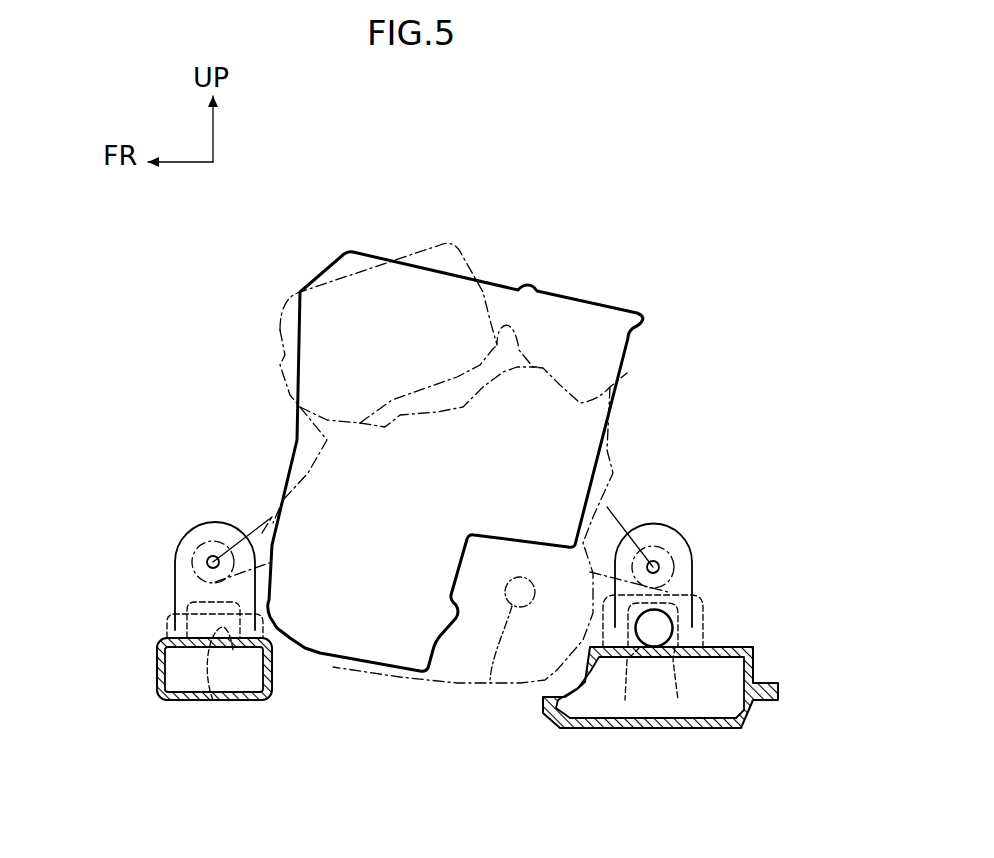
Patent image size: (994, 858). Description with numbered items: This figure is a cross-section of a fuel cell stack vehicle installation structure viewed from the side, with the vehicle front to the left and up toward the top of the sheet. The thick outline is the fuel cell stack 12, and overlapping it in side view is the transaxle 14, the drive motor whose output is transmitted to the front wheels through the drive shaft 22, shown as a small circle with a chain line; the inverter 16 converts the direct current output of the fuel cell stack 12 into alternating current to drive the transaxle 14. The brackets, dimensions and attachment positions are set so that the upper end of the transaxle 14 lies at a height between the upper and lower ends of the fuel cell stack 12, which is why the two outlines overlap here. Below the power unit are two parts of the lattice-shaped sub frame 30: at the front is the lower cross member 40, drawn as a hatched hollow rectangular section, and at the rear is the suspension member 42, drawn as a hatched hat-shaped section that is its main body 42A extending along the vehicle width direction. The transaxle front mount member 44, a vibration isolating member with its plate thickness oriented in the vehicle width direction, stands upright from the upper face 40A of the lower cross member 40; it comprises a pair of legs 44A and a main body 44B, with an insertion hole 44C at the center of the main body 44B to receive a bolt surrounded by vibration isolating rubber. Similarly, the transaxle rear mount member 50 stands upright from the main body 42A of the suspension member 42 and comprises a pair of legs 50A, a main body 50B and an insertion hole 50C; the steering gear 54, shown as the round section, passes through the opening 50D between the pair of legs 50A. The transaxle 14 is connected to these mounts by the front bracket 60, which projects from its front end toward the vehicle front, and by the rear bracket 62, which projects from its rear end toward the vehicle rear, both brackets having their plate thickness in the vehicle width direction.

The fuel cell stack 12 is at (605, 303).
The transaxle 14 is at (627, 373).
The inverter 16 is at (280, 322).
The drive shaft 22 is at (490, 683).
The sub frame 30 is at (495, 725).
The lower cross member 40 is at (218, 713).
The upper face 40A is at (213, 700).
The suspension member 42 is at (671, 735).
The main body 42A is at (597, 728).
The transaxle front mount member 44 is at (203, 520).
The legs 44A is at (162, 618).
The main body 44B is at (173, 572).
The insertion hole 44C is at (192, 543).
The transaxle rear mount member 50 is at (660, 516).
The legs 50A is at (715, 612).
The main body 50B is at (697, 573).
The insertion hole 50C is at (693, 543).
The opening 50D is at (678, 700).
The steering gear 54 is at (625, 700).
The front bracket 60 is at (262, 533).
The rear bracket 62 is at (617, 513).